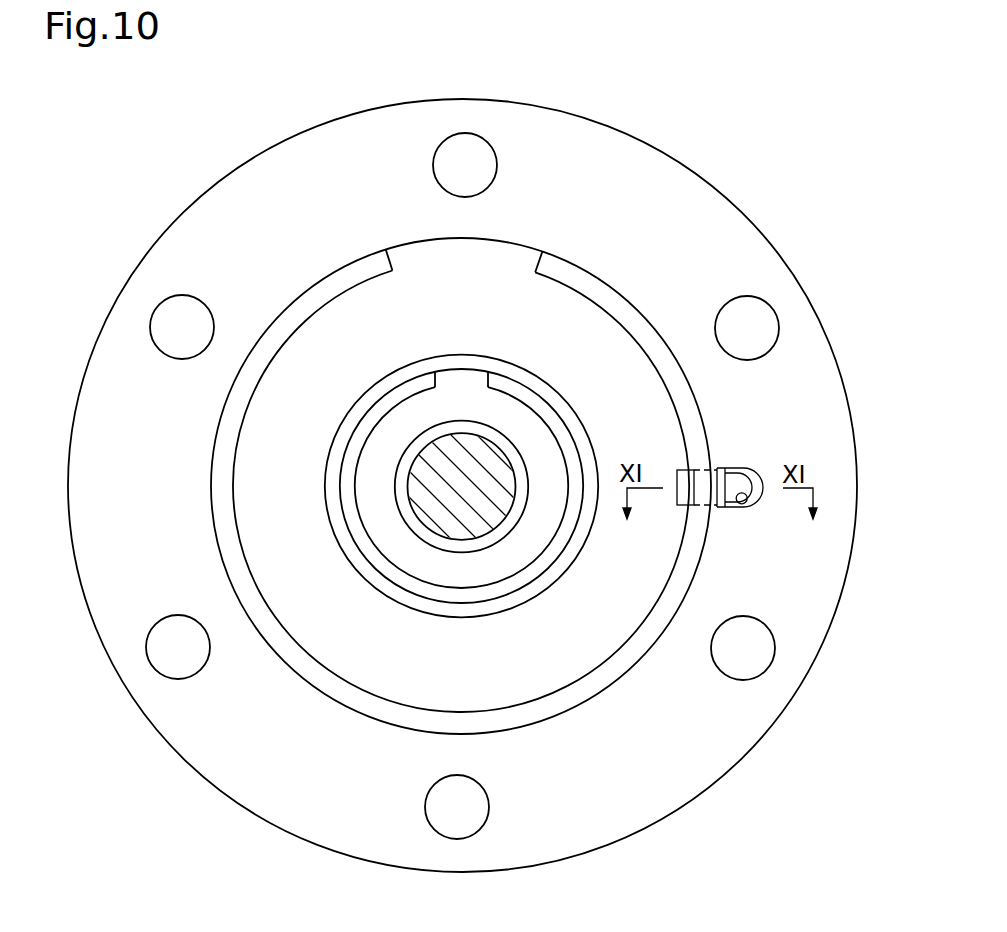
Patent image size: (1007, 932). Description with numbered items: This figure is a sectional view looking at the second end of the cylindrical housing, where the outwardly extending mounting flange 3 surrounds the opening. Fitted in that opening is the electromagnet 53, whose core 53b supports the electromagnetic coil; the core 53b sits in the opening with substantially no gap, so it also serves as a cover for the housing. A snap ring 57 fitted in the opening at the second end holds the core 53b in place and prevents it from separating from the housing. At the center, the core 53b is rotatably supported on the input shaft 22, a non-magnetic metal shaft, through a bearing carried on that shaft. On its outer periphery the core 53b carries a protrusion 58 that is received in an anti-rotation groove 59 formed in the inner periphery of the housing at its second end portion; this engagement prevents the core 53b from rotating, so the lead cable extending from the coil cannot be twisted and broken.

The mounting flange 3 is at (313, 163).
The electromagnet 53 is at (418, 397).
The core 53b is at (288, 365).
The snap ring 57 is at (613, 293).
The protrusion 58 is at (740, 477).
The anti-rotation groove 59 is at (752, 505).
The input shaft 22 is at (485, 518).